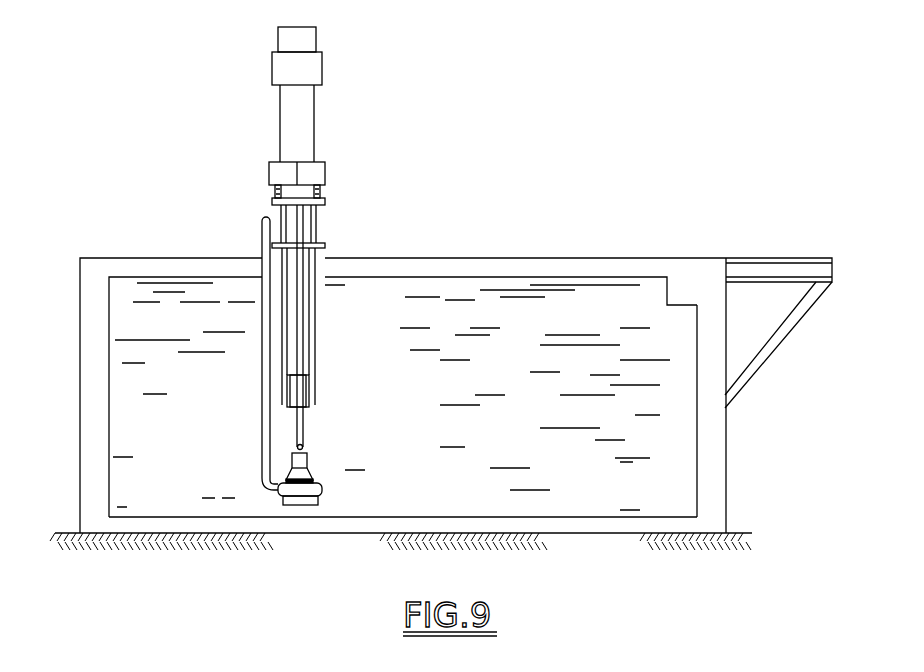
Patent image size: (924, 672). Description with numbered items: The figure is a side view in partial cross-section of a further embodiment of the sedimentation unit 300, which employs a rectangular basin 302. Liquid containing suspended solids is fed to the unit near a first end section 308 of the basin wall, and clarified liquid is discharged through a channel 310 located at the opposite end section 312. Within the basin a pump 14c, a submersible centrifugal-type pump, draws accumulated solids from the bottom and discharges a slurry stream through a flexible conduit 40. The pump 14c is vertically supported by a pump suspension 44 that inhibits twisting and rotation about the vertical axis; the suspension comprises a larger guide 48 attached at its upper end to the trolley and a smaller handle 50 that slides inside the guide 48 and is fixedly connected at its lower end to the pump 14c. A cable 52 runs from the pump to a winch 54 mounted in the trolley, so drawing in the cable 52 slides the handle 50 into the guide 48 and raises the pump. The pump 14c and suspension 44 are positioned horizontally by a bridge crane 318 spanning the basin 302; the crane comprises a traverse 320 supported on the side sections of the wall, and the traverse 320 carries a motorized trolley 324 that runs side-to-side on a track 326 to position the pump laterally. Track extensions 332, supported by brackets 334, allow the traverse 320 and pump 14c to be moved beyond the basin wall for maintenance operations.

The sedimentation unit 300 is at (437, 330).
The basin 302 is at (538, 451).
The first end section 308 is at (97, 490).
The channel 310 is at (680, 292).
The opposite end section 312 is at (713, 478).
The bridge crane 318 is at (323, 261).
The traverse 320 is at (325, 199).
The motorized trolley 324 is at (278, 173).
The track 326 is at (323, 207).
The track extensions 332 is at (810, 258).
The brackets 334 is at (745, 378).
The winch 54 is at (308, 68).
The cable 52 is at (303, 300).
The pump suspension apparatus 44 is at (313, 350).
The guide 48 is at (305, 380).
The handle 50 is at (308, 450).
The flexible conduit 40 is at (262, 380).
The pump 14c is at (320, 490).